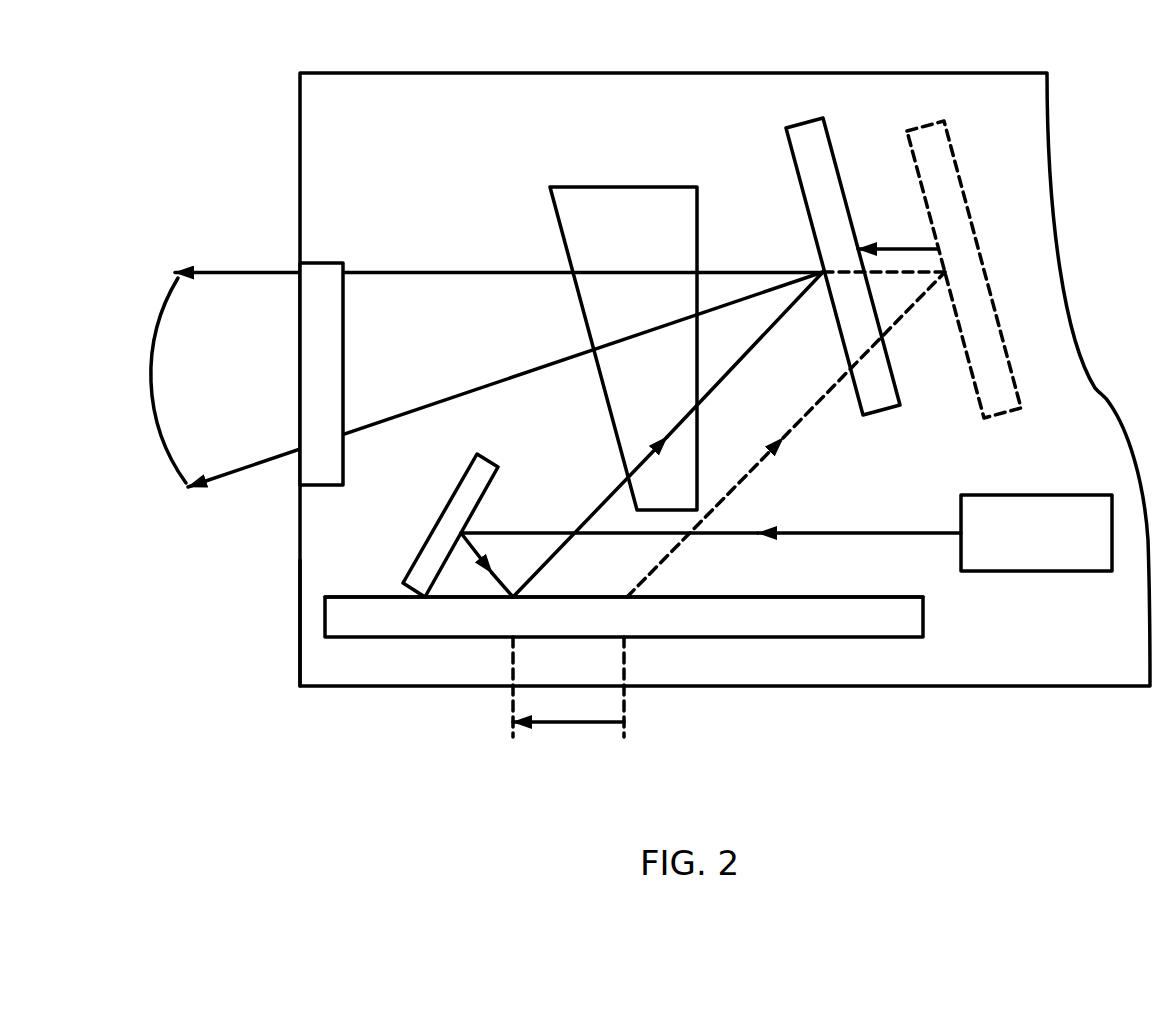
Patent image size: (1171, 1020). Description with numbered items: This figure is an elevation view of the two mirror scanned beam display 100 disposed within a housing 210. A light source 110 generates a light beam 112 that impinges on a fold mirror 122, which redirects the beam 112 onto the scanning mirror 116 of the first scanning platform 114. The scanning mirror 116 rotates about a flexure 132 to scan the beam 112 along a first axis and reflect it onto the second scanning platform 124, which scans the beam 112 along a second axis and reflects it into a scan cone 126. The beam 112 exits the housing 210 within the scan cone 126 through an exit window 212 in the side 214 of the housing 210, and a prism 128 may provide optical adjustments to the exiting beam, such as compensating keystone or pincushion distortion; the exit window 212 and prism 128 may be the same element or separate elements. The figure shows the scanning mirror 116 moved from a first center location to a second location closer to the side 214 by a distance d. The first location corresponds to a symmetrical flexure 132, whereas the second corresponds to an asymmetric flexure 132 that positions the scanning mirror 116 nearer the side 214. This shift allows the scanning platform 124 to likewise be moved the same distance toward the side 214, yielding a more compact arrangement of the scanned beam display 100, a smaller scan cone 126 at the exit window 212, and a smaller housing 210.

The scanned beam display 100 is at (1095, 137).
The light source 110 is at (1035, 495).
The light beam 112 is at (890, 533).
The first scanning platform 114 is at (923, 613).
The scanning mirror 116 is at (540, 597).
The fold mirror 122 is at (458, 481).
The scanning platform 124 is at (787, 152).
The scan cone 126 is at (448, 272).
The prism 128 is at (648, 185).
The flexure 132 is at (837, 597).
The housing 210 is at (363, 73).
The exit window 212 is at (320, 262).
The side 214 is at (300, 622).